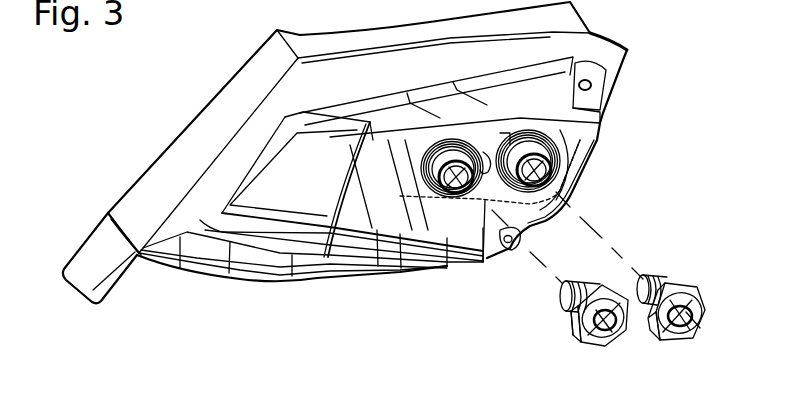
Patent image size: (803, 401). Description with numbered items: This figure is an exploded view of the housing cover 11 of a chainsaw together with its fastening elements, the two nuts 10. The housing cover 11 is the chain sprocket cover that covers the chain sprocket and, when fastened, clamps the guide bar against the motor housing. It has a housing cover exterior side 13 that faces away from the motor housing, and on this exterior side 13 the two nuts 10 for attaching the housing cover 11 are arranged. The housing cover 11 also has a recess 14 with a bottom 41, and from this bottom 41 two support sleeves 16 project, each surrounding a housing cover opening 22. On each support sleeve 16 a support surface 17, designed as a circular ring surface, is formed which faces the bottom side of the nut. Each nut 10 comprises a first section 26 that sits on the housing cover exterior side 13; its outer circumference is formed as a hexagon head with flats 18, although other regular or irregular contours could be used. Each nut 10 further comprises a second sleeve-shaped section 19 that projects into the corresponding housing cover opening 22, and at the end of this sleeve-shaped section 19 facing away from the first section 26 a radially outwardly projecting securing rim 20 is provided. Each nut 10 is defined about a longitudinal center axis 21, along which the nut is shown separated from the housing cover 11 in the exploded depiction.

The nuts 10 is at (650, 347).
The housing cover 11 is at (193, 153).
The housing cover exterior side 13 is at (300, 262).
The recess 14 is at (463, 205).
The support sleeves 16 is at (598, 120).
The support surface 17 is at (545, 163).
The flats 18 is at (637, 293).
The second sleeve-shaped section 19 is at (665, 284).
The securing rim 20 is at (562, 299).
The longitudinal center axis 21 is at (708, 347).
The housing cover opening 22 is at (449, 182).
The first section 26 is at (578, 338).
The bottom 41 is at (485, 200).